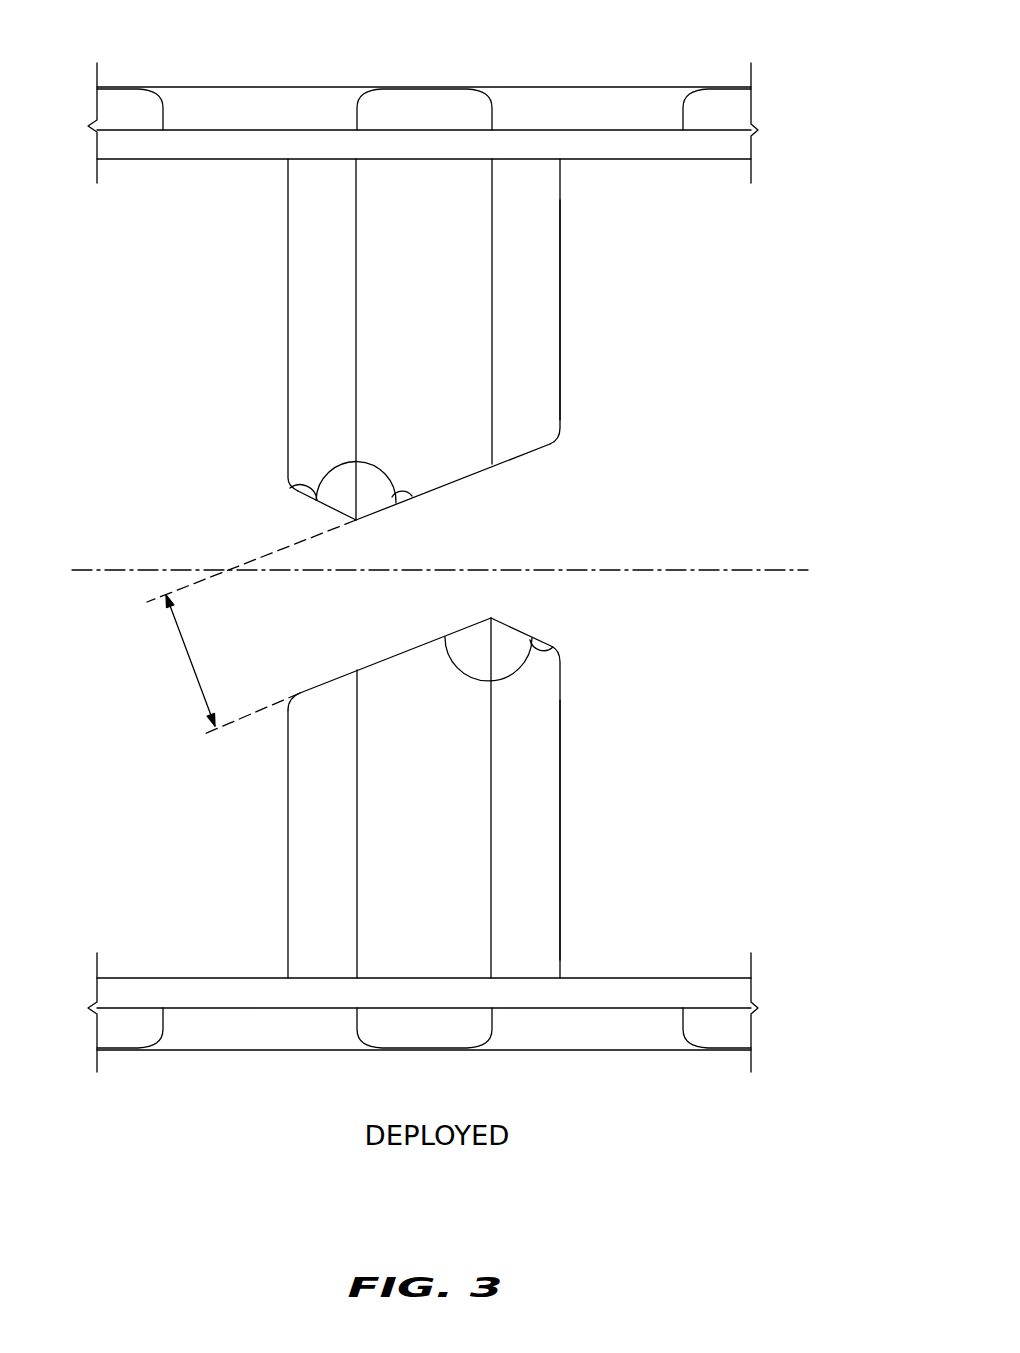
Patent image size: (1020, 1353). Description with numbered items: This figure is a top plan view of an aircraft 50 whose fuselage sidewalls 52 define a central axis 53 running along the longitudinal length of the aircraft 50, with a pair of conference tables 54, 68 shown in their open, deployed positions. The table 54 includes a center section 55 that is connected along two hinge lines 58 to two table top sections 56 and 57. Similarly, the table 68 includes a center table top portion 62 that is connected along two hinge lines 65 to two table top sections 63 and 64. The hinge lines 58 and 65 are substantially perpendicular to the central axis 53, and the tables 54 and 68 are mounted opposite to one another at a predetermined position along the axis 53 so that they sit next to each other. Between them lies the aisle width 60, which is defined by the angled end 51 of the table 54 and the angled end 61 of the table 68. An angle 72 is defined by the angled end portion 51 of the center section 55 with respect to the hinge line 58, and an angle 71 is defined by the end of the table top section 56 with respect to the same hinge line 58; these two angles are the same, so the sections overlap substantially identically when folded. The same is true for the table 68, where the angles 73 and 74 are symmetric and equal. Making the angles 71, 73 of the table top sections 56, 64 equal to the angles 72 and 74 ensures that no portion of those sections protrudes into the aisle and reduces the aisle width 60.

The aircraft 50 is at (151, 339).
The angled end of table 51 is at (460, 478).
The fuselage sidewalls 52 is at (260, 100).
The central axis 53 is at (682, 570).
The table 54 is at (566, 259).
The center section 55 is at (413, 294).
The table top section 56 is at (310, 292).
The table top section 57 is at (538, 343).
The hinge lines 58 is at (492, 412).
The aisle width 60 is at (195, 668).
The angled end of table 61 is at (418, 650).
The center table top portion 62 is at (399, 914).
The table top section 63 is at (311, 886).
The table top section 64 is at (531, 718).
The hinge lines 65 is at (357, 857).
The table 68 is at (566, 906).
The angle 71 is at (290, 488).
The angle 72 is at (405, 496).
The angle 73 is at (530, 650).
The angle 74 is at (467, 663).